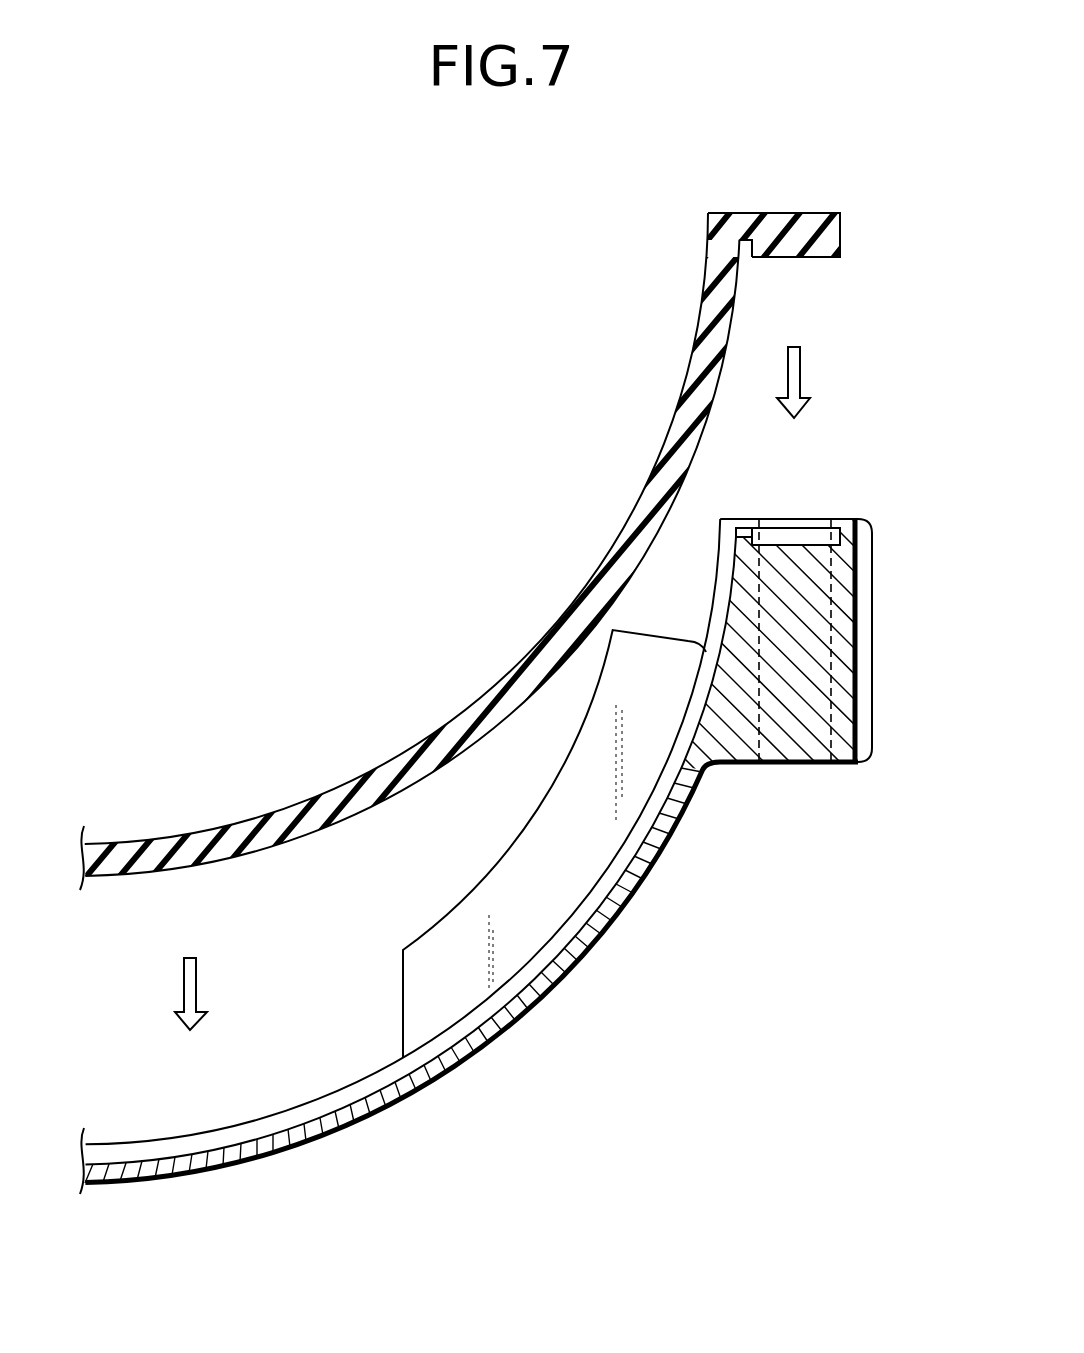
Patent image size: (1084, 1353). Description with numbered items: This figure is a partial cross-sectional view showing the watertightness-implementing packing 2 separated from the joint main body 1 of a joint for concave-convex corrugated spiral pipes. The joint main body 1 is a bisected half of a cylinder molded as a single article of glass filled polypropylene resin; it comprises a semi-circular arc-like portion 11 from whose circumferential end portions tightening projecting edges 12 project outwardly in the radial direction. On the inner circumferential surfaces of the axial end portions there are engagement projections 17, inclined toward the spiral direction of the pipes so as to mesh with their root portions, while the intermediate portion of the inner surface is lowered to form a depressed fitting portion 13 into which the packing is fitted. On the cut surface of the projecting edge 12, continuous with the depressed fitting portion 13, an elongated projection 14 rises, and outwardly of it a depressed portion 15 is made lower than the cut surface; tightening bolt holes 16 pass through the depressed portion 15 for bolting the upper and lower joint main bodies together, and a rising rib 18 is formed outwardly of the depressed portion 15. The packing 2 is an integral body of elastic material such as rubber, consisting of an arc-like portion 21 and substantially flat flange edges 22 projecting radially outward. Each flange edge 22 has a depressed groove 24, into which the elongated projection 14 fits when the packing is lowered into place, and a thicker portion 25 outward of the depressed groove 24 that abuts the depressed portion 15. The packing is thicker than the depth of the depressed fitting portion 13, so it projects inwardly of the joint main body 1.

The joint main body 1 is at (582, 815).
The watertightness-implementing packing 2 is at (542, 631).
The semi-circular arc-like portion 11 is at (473, 1045).
The tightening projecting edge 12 is at (751, 643).
The depressed fitting portion 13 is at (321, 1098).
The elongated projection 14 is at (748, 528).
The depressed portion 15 is at (800, 528).
The tightening bolt hole 16 is at (799, 740).
The engagement projection 17 is at (443, 948).
The rising rib 18 is at (863, 524).
The arc-like portion 21 is at (152, 850).
The flange edge 22 is at (784, 233).
The depressed groove 24 is at (745, 250).
The thicker portion 25 is at (803, 260).